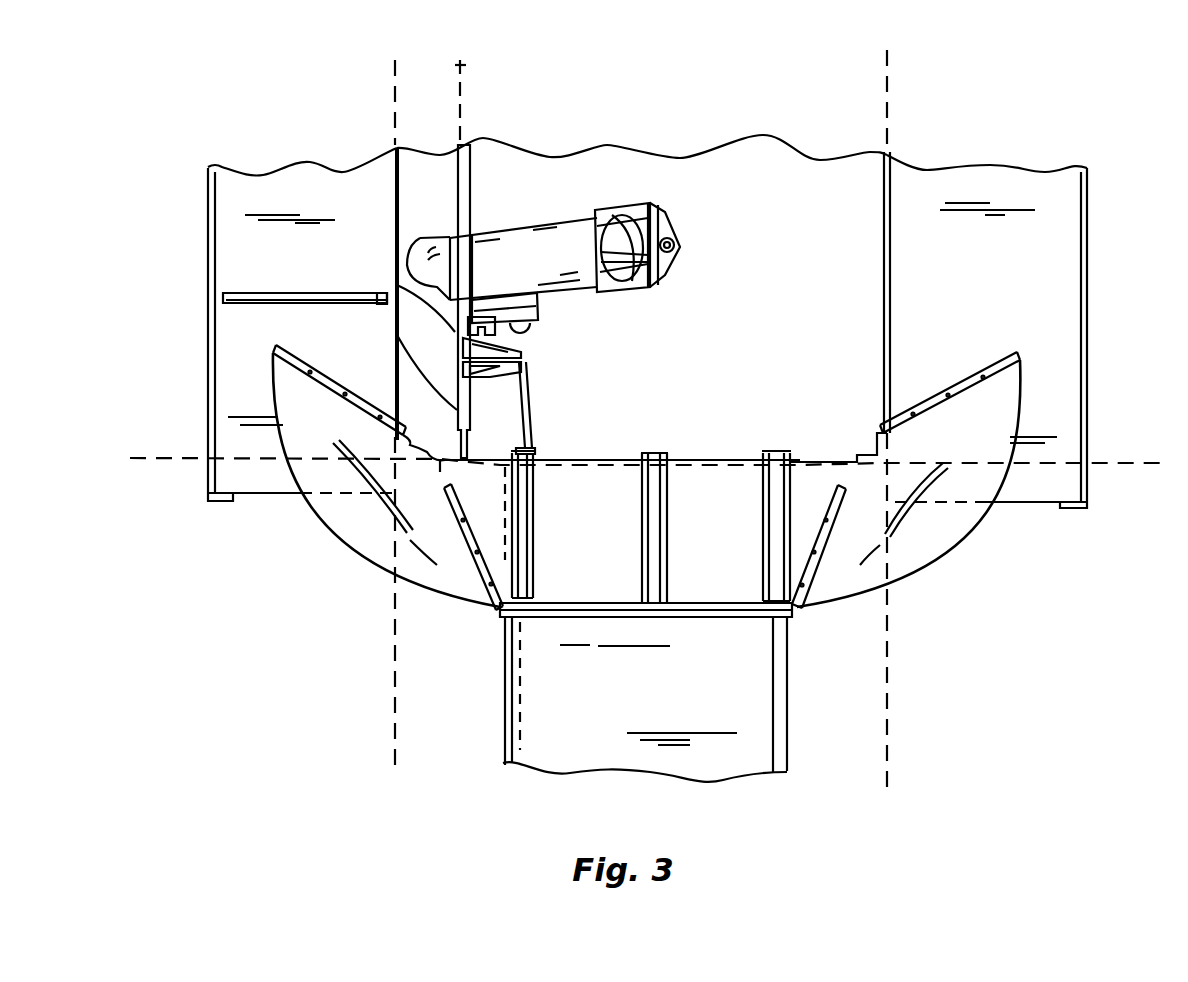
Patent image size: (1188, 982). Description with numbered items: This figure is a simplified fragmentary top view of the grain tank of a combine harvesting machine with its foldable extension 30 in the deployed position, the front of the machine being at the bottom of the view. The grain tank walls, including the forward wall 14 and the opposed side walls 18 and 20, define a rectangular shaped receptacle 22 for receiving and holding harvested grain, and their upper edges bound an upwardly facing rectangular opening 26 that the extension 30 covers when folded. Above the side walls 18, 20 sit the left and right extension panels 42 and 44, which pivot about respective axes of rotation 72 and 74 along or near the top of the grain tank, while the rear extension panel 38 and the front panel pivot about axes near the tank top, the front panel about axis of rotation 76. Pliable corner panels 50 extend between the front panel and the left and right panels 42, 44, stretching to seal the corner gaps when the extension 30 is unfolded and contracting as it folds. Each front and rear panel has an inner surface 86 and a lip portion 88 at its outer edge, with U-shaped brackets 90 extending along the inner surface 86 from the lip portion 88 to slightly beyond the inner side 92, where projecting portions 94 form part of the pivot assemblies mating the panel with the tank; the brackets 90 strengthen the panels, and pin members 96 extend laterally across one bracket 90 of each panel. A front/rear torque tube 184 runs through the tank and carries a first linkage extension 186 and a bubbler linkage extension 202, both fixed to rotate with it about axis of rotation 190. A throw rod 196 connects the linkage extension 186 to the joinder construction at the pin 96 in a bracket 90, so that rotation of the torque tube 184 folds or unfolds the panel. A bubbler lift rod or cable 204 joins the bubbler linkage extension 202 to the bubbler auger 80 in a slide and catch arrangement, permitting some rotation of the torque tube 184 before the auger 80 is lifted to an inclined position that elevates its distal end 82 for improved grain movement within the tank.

The forward wall 14 is at (826, 460).
The side wall 18 is at (885, 334).
The side wall 20 is at (400, 207).
The receptacle 22 is at (778, 268).
The rectangular opening 26 is at (580, 172).
The foldable extension 30 is at (690, 96).
The rear extension panel 38 is at (563, 600).
The left extension panel 42 is at (1065, 240).
The right extension panel 44 is at (233, 246).
The corner panel 50 is at (340, 522).
The axis of rotation 72 is at (392, 650).
The axis of rotation 74 is at (890, 640).
The axis of rotation 76 is at (1153, 460).
The bubbler auger 80 is at (585, 288).
The distal end 82 is at (672, 228).
The inner surface 86 is at (568, 572).
The lip portion 88 is at (627, 612).
The U-shaped bracket 90 is at (537, 520).
The inner side 92 is at (698, 460).
The projecting portion 94 is at (518, 455).
The pin member 96 is at (483, 508).
The front/rear torque tube 184 is at (397, 403).
The first linkage extension 186 is at (523, 354).
The axis of rotation 190 is at (462, 68).
The throw rod 196 is at (530, 420).
The bubbler linkage extension 202 is at (395, 298).
The bubbler lift rod or cable 204 is at (533, 290).